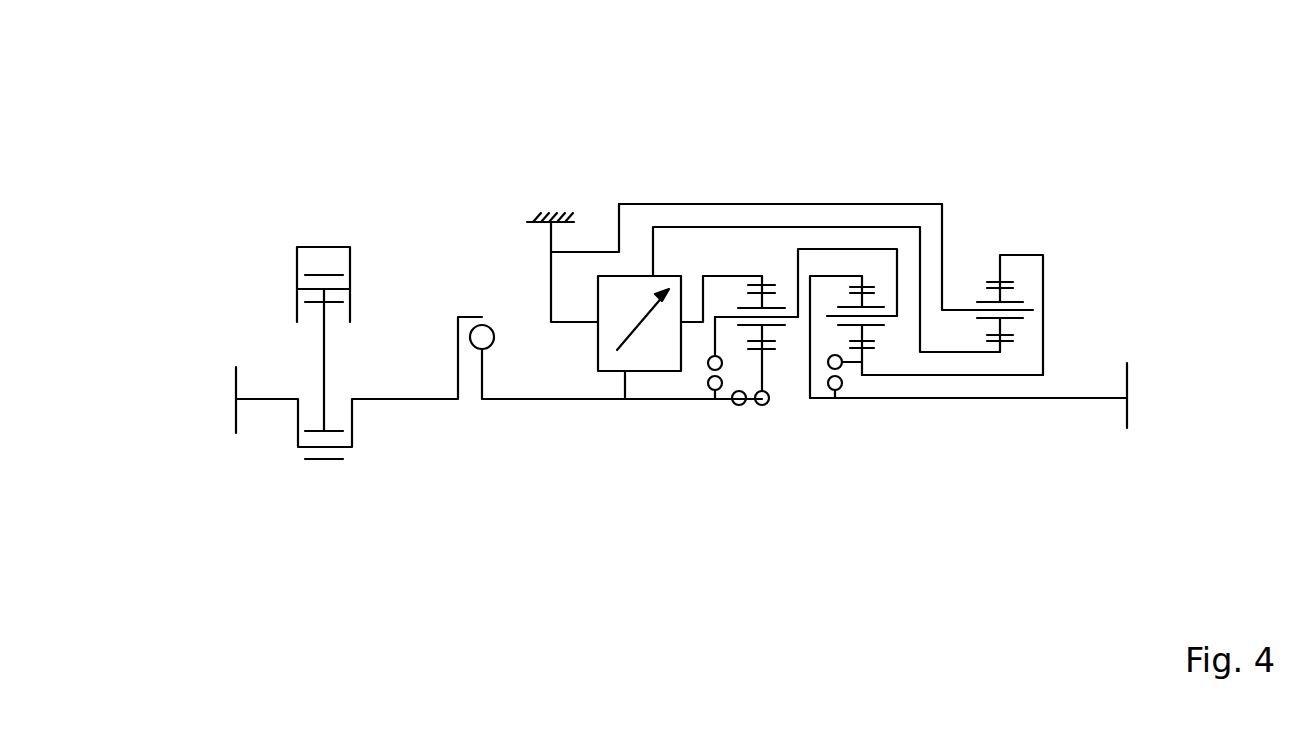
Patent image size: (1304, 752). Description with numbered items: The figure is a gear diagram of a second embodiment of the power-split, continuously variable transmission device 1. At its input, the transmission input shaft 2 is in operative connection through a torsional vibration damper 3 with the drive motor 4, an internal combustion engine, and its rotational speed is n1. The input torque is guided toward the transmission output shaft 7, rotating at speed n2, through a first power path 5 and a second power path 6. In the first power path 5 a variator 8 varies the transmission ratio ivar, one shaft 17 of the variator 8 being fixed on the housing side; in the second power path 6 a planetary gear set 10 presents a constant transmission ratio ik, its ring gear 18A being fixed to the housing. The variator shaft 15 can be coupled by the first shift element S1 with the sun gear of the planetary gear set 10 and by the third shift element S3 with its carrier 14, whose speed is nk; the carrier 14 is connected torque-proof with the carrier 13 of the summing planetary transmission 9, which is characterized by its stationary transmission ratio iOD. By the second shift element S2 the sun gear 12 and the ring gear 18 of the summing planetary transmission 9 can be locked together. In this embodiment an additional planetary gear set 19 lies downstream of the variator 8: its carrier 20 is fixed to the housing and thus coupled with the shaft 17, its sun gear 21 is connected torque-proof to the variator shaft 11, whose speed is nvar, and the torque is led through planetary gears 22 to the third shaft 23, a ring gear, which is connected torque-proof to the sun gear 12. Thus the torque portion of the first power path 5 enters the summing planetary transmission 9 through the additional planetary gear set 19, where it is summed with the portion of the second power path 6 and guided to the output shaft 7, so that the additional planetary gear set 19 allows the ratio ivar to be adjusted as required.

The transmission device 1 is at (382, 190).
The transmission input shaft 2 is at (487, 400).
The torsional vibration damper 3 is at (470, 337).
The drive motor 4 is at (295, 265).
The first power path 5 is at (597, 416).
The second power path 6 is at (805, 427).
The transmission output shaft 7 is at (1103, 396).
The variator 8 is at (631, 291).
The summing planetary transmission 9 is at (860, 191).
The additional planetary gear set 10 is at (760, 191).
The shaft of the variator 11 is at (692, 324).
The sun gear of the summing planetary transmission 12 is at (866, 358).
The carrier of the summing planetary transmission 13 is at (899, 280).
The carrier of the planetary gear set 14 is at (793, 322).
The shaft of the variator 15 is at (620, 386).
The shaft of the variator 17 is at (550, 280).
The ring gear of the summing planetary transmission 18 is at (865, 280).
The ring gear of the planetary gear set 18A is at (763, 278).
The additional planetary gear set 19 is at (998, 191).
The carrier of the additional planetary gear set 20 is at (962, 308).
The sun gear of the additional planetary gear set 21 is at (1047, 340).
The planetary gears 22 is at (1047, 295).
The third shaft of the additional planetary gear set 23 is at (1047, 256).
The first shift element S1 is at (740, 406).
The second shift element S2 is at (842, 385).
The third shift element S3 is at (708, 402).
The rotational speed of the transmission input shaft n1 is at (540, 400).
The rotational speed of the transmission output shaft n2 is at (1067, 398).
The rotational speed of the variator shaft nvar is at (758, 277).
The rotational speed of the carrier shaft nk is at (848, 249).
The transmission ratio of the first power path ivar is at (637, 439).
The constant transmission ratio ik is at (762, 439).
The stationary transmission ratio iOD is at (863, 439).